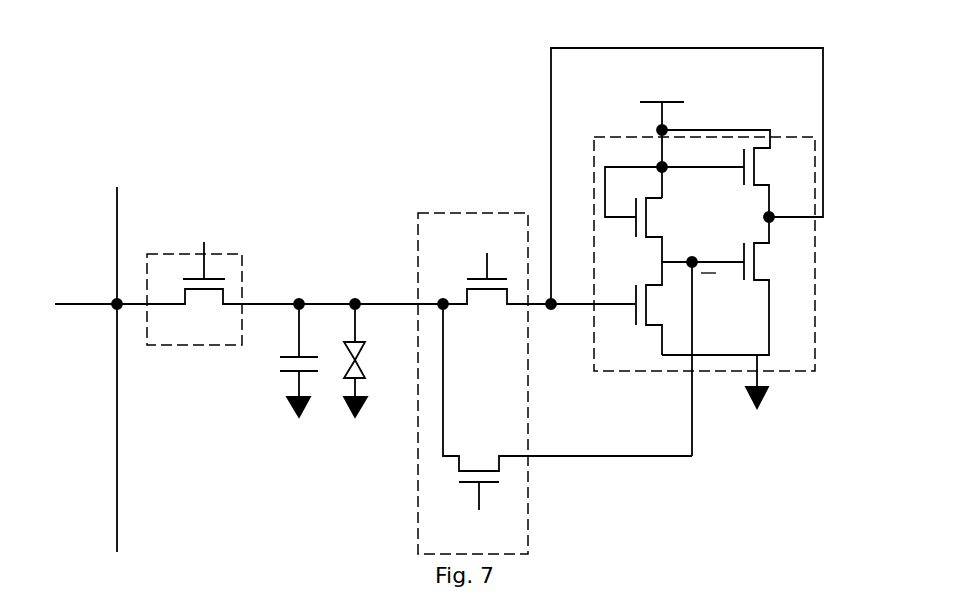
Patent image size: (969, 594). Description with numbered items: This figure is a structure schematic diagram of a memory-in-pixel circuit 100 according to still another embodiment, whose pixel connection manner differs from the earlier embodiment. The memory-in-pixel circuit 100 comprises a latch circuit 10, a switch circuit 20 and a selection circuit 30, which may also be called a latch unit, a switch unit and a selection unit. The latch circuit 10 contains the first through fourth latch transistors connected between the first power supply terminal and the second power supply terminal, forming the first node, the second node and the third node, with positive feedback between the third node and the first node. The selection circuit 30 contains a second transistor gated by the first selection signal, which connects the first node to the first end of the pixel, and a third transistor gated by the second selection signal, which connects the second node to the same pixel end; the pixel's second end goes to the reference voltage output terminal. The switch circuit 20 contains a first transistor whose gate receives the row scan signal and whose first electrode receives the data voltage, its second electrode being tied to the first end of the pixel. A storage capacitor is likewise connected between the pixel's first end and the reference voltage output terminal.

The memory-in-pixel circuit 100 is at (331, 95).
The switch circuit 20 is at (243, 254).
The selection circuit 30 is at (528, 486).
The latch circuit 10 is at (815, 282).